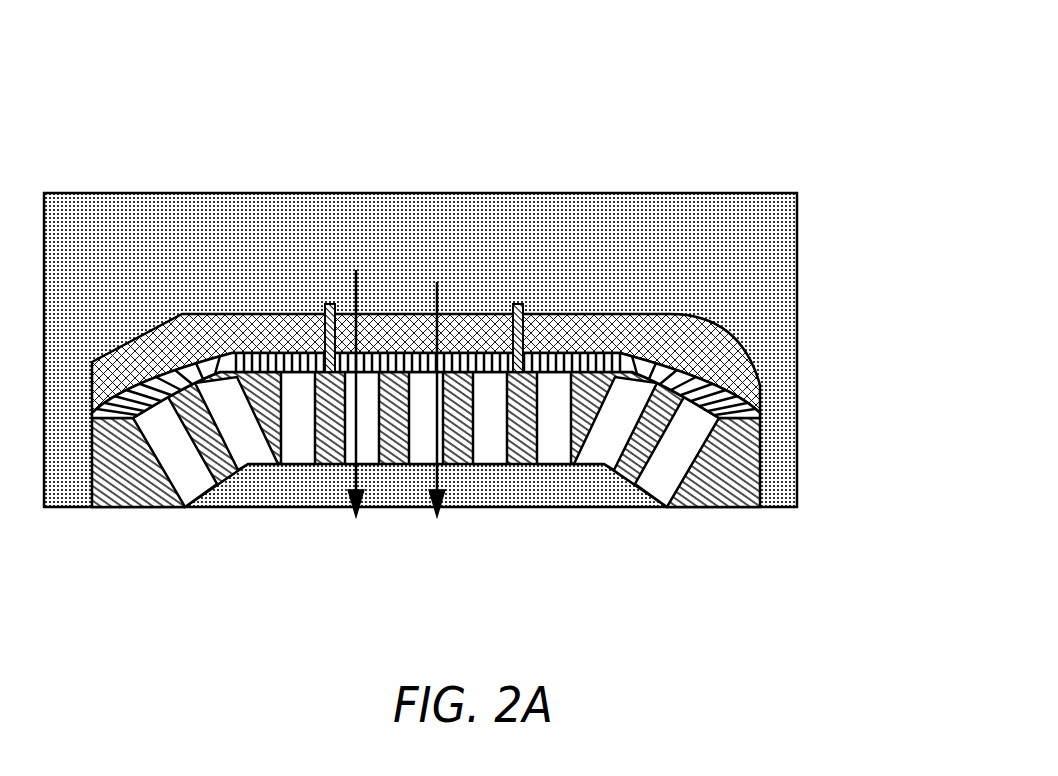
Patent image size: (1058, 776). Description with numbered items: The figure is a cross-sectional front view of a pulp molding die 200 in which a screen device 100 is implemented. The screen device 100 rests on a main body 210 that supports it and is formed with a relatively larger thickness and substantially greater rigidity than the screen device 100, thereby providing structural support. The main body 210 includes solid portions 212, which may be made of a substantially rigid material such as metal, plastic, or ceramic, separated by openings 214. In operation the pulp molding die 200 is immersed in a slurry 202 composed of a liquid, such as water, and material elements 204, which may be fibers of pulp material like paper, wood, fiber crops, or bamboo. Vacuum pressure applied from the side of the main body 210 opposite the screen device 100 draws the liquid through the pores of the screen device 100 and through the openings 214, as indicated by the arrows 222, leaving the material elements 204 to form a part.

The screen device 100 is at (426, 229).
The pulp molding die 200 is at (521, 353).
The slurry 202 is at (202, 213).
The material elements 204 is at (258, 313).
The main body 210 is at (443, 519).
The solid portions 212 is at (730, 507).
The openings 214 is at (192, 502).
The arrows 222 is at (437, 478).